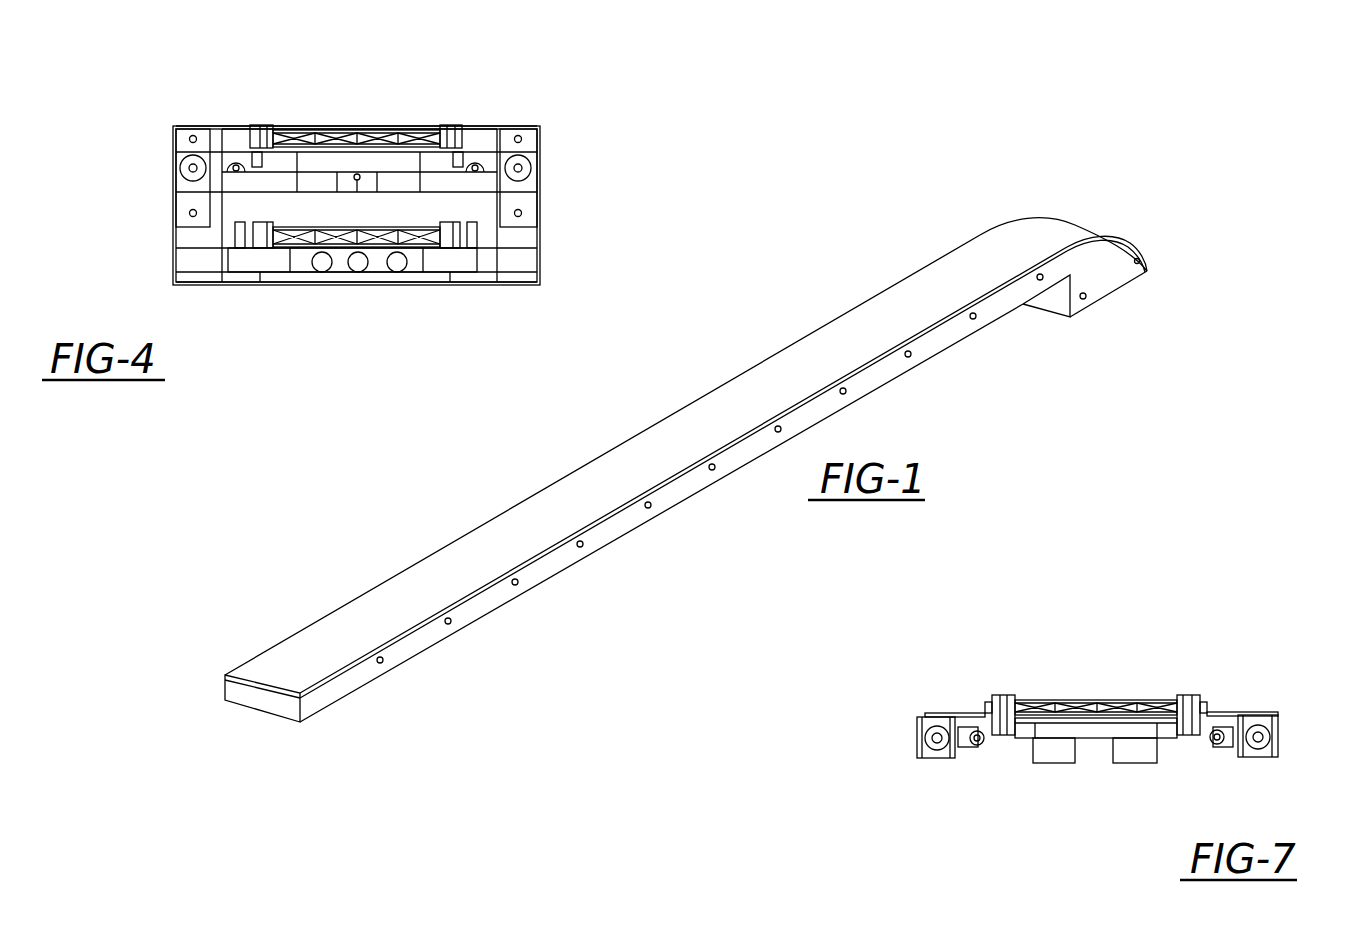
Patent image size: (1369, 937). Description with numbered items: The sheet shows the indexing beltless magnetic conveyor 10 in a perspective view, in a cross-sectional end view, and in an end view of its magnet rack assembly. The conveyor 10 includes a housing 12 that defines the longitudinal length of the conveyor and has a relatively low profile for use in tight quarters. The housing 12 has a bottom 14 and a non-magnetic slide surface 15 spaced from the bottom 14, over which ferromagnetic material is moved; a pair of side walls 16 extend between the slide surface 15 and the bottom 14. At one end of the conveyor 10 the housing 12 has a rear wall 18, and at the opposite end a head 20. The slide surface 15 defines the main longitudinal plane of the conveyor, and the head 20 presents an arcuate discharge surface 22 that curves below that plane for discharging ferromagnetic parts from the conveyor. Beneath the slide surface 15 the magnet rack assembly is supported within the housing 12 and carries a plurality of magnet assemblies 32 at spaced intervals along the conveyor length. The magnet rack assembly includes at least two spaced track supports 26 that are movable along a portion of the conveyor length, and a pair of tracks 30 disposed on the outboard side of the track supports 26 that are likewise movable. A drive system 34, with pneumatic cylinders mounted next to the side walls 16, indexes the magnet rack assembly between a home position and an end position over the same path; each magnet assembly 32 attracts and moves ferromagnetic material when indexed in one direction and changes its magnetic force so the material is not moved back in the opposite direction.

In FIG. 4, the conveyor 10 is at (379, 199).
In FIG. 1, the conveyor 10 is at (716, 464).
In FIG. 4, the housing 12 is at (546, 188).
In FIG. 4, the bottom 14 is at (457, 285).
In FIG. 4, the non-magnetic slide surface 15 is at (291, 126).
In FIG. 1, the non-magnetic slide surface 15 is at (518, 500).
In FIG. 4, the side walls 16 is at (173, 154).
In FIG. 1, the side walls 16 is at (456, 627).
In FIG. 1, the rear wall 18 is at (260, 713).
In FIG. 1, the head 20 is at (1151, 234).
In FIG. 1, the arcuate discharge surface 22 is at (1087, 228).
In FIG. 7, the track supports 26 is at (1047, 760).
In FIG. 7, the tracks 30 is at (1170, 739).
In FIG. 4, the magnet assemblies 32 is at (429, 124).
In FIG. 7, the magnet assemblies 32 is at (1115, 695).
In FIG. 7, the drive system 34 is at (1286, 714).